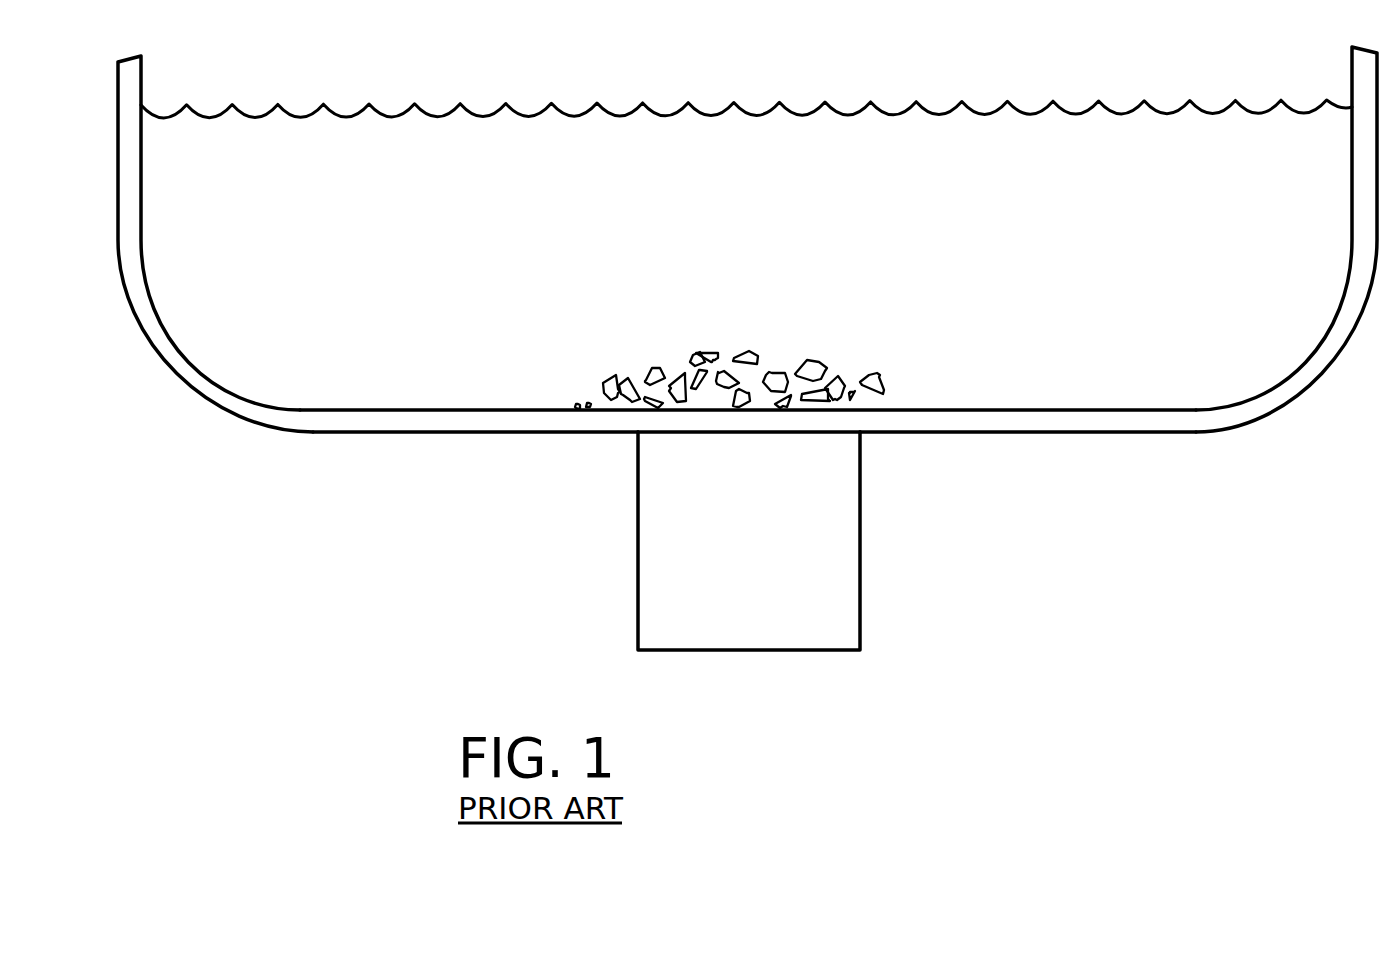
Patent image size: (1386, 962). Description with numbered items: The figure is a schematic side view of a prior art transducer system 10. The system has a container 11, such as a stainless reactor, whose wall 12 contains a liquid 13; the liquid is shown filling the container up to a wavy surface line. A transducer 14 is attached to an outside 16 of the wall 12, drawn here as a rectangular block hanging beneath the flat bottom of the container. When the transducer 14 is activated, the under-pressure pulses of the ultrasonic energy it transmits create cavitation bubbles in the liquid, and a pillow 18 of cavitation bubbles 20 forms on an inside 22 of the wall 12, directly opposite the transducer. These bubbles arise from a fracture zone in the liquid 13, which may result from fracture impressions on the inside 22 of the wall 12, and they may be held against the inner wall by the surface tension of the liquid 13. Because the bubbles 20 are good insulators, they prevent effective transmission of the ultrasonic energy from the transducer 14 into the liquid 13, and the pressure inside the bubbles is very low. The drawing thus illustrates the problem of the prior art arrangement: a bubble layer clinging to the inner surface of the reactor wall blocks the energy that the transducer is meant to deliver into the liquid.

The transducer system 10 is at (615, 168).
The container 11 is at (1349, 322).
The wall 12 is at (517, 422).
The liquid 13 is at (518, 240).
The transducer 14 is at (807, 607).
The outside of the wall 16 is at (622, 434).
The pillow of cavitation bubbles 18 is at (797, 360).
The cavitation bubbles 20 is at (750, 352).
The inside of the wall 22 is at (572, 408).